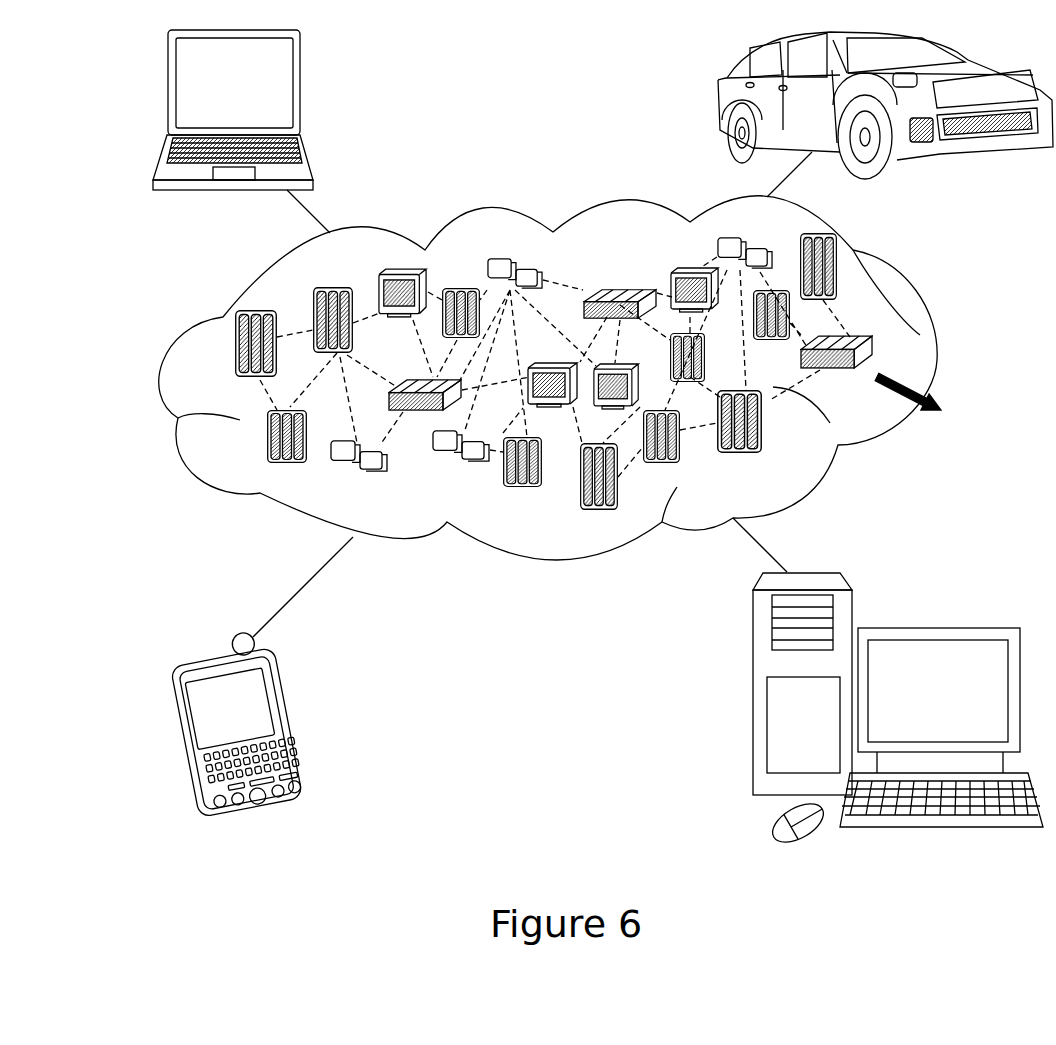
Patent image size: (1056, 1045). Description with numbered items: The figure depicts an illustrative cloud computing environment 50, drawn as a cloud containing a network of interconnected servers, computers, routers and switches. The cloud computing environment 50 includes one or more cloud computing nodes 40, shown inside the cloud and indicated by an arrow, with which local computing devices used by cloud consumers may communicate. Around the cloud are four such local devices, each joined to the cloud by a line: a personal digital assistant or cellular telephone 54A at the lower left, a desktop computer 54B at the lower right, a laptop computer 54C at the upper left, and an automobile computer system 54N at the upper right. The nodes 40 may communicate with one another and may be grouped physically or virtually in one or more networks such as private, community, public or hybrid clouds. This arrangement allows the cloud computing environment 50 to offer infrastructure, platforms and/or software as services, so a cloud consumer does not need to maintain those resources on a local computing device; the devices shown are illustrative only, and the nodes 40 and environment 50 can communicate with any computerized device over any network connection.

The personal digital assistant (PDA) or cellular telephone 54A is at (295, 720).
The desktop computer 54B is at (933, 628).
The laptop computer 54C is at (300, 90).
The automobile computer system 54N is at (720, 102).
The cloud computing environment 50 is at (937, 350).
The cloud computing nodes 40 is at (926, 399).